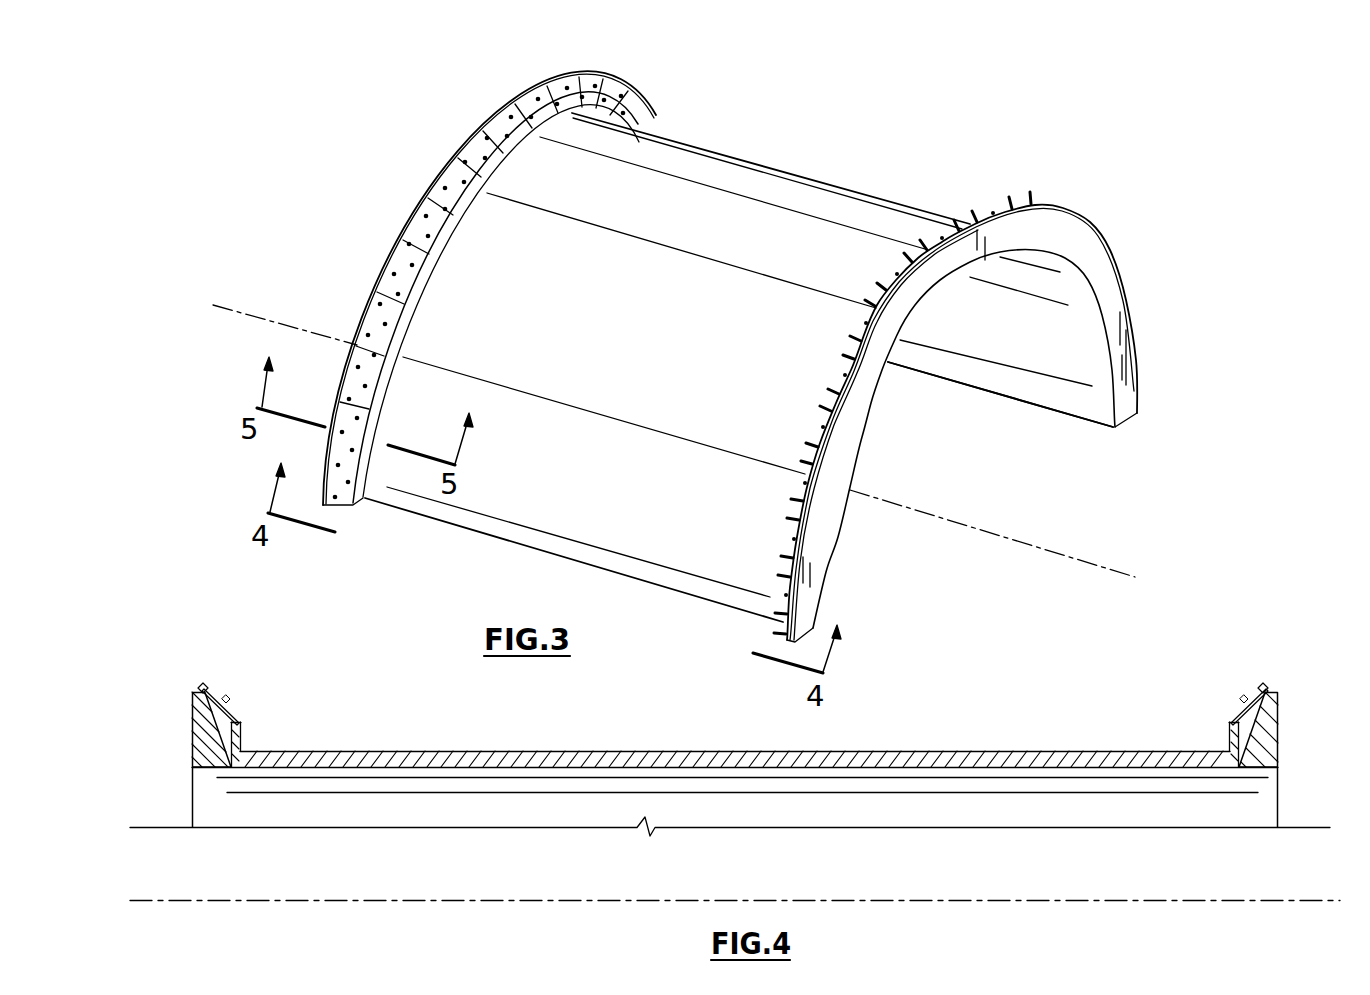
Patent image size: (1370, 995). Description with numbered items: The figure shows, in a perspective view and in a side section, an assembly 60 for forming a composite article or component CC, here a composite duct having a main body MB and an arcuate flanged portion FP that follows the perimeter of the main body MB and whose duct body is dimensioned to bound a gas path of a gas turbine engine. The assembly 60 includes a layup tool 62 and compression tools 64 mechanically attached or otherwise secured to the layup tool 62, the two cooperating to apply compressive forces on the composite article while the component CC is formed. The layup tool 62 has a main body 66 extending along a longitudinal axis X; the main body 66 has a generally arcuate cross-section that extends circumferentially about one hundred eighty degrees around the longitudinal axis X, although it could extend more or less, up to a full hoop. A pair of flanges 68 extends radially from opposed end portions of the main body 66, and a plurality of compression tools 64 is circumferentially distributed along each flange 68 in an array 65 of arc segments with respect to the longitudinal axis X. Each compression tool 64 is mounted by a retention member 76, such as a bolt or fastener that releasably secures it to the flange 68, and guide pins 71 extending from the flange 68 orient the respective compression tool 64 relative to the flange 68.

In FIG. 3, the assembly 60 is at (324, 128).
In FIG. 4, the assembly 60 is at (175, 643).
In FIG. 3, the layup tool 62 is at (1127, 292).
In FIG. 4, the layup tool 62 is at (191, 762).
In FIG. 3, the compression tool 64 is at (554, 71).
In FIG. 4, the compression tool 64 is at (204, 682).
In FIG. 3, the array 65 is at (613, 63).
In FIG. 3, the main body 66 is at (1037, 407).
In FIG. 4, the main body 66 is at (502, 758).
In FIG. 3, the flange 68 is at (489, 103).
In FIG. 4, the flange 68 is at (196, 710).
In FIG. 3, the guide pin 71 is at (405, 257).
In FIG. 4, the guide pin 71 is at (226, 696).
In FIG. 3, the retention member 76 is at (417, 222).
In FIG. 3, the component CC is at (731, 150).
In FIG. 4, the component CC is at (403, 748).
In FIG. 3, the main body MB is at (893, 198).
In FIG. 4, the main body MB is at (290, 750).
In FIG. 4, the flanged portion FP is at (240, 735).
In FIG. 3, the longitudinal axis X is at (1068, 543).
In FIG. 4, the longitudinal axis X is at (1310, 892).